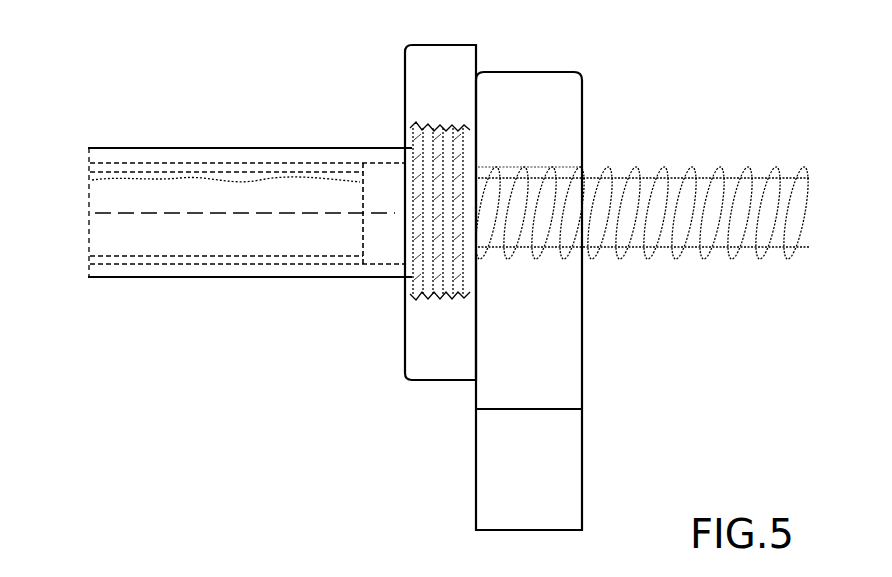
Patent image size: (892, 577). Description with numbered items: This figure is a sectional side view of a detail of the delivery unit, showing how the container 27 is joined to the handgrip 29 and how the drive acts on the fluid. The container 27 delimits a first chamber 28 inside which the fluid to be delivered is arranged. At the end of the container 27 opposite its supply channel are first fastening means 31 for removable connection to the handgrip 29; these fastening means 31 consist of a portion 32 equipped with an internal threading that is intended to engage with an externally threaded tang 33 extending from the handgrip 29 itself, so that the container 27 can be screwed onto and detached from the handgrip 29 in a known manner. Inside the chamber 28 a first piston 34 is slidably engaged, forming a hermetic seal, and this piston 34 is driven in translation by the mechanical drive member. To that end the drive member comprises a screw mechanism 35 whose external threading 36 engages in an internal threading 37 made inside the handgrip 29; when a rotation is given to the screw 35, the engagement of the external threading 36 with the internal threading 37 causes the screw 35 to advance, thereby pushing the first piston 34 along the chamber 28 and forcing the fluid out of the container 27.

The container 27 is at (148, 148).
The first chamber 28 is at (204, 190).
The handgrip 29 is at (582, 470).
The first fastening means 31 is at (412, 393).
The portion equipped with an internal threading 32 is at (410, 272).
The externally threaded tang 33 is at (447, 126).
The first piston 34 is at (380, 177).
The screw mechanism 35 is at (713, 160).
The external threading 36 is at (641, 166).
The internal threading 37 is at (533, 177).